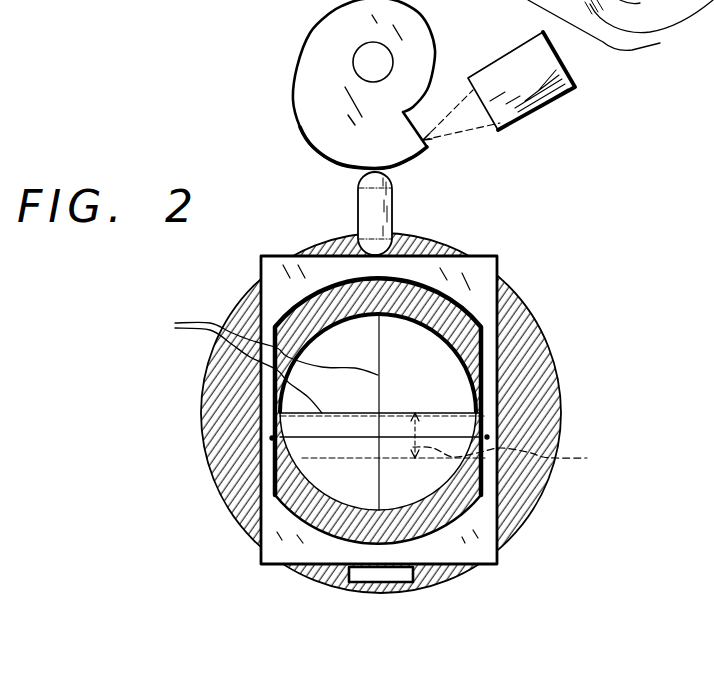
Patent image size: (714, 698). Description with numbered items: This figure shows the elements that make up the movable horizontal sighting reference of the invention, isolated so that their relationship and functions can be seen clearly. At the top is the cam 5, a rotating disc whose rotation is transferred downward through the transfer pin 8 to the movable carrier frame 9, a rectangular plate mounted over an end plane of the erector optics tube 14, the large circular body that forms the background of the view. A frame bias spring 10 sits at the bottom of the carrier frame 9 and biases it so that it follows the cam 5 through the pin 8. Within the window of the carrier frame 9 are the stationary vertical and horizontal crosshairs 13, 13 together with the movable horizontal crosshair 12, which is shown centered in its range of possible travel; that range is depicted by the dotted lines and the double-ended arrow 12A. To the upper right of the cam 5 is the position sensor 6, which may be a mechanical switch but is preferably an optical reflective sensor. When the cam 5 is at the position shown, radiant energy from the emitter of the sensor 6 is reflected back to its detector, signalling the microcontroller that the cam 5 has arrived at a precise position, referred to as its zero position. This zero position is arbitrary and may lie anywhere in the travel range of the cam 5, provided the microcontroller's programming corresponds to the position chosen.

The cam 5 is at (293, 99).
The position sensor 6 is at (548, 102).
The transfer pin 8 is at (358, 205).
The movable carrier frame 9 is at (246, 528).
The frame bias spring 10 is at (418, 572).
The movable horizontal crosshair 12 is at (453, 437).
The range of possible travel 12A is at (526, 459).
The stationary vertical and horizontal crosshairs 13 is at (306, 412).
The erector optics tube 14 is at (525, 305).